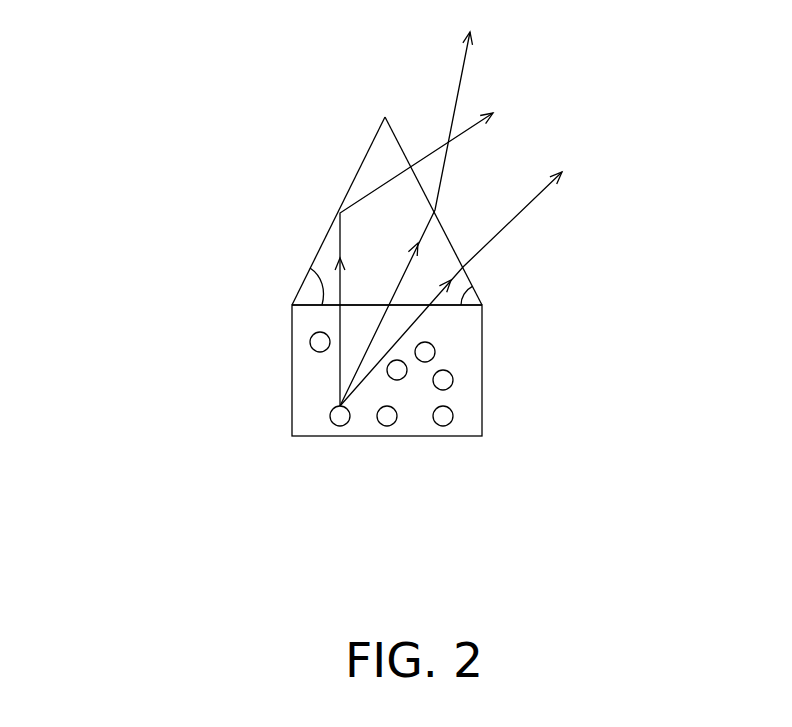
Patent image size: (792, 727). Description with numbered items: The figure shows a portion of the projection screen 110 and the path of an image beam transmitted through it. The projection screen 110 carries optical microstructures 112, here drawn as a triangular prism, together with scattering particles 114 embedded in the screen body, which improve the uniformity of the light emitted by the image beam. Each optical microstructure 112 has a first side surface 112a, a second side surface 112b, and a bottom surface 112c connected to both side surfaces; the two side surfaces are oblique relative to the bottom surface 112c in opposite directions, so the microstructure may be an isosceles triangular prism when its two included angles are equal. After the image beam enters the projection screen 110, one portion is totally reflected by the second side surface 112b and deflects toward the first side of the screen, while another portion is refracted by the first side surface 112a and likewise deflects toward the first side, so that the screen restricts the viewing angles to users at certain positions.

The projection screen 110 is at (447, 276).
The optical microstructures 112 is at (361, 196).
The first side surface 112a is at (440, 227).
The second side surface 112b is at (365, 162).
The bottom surface 112c is at (316, 306).
The scattering particles 114 is at (445, 415).